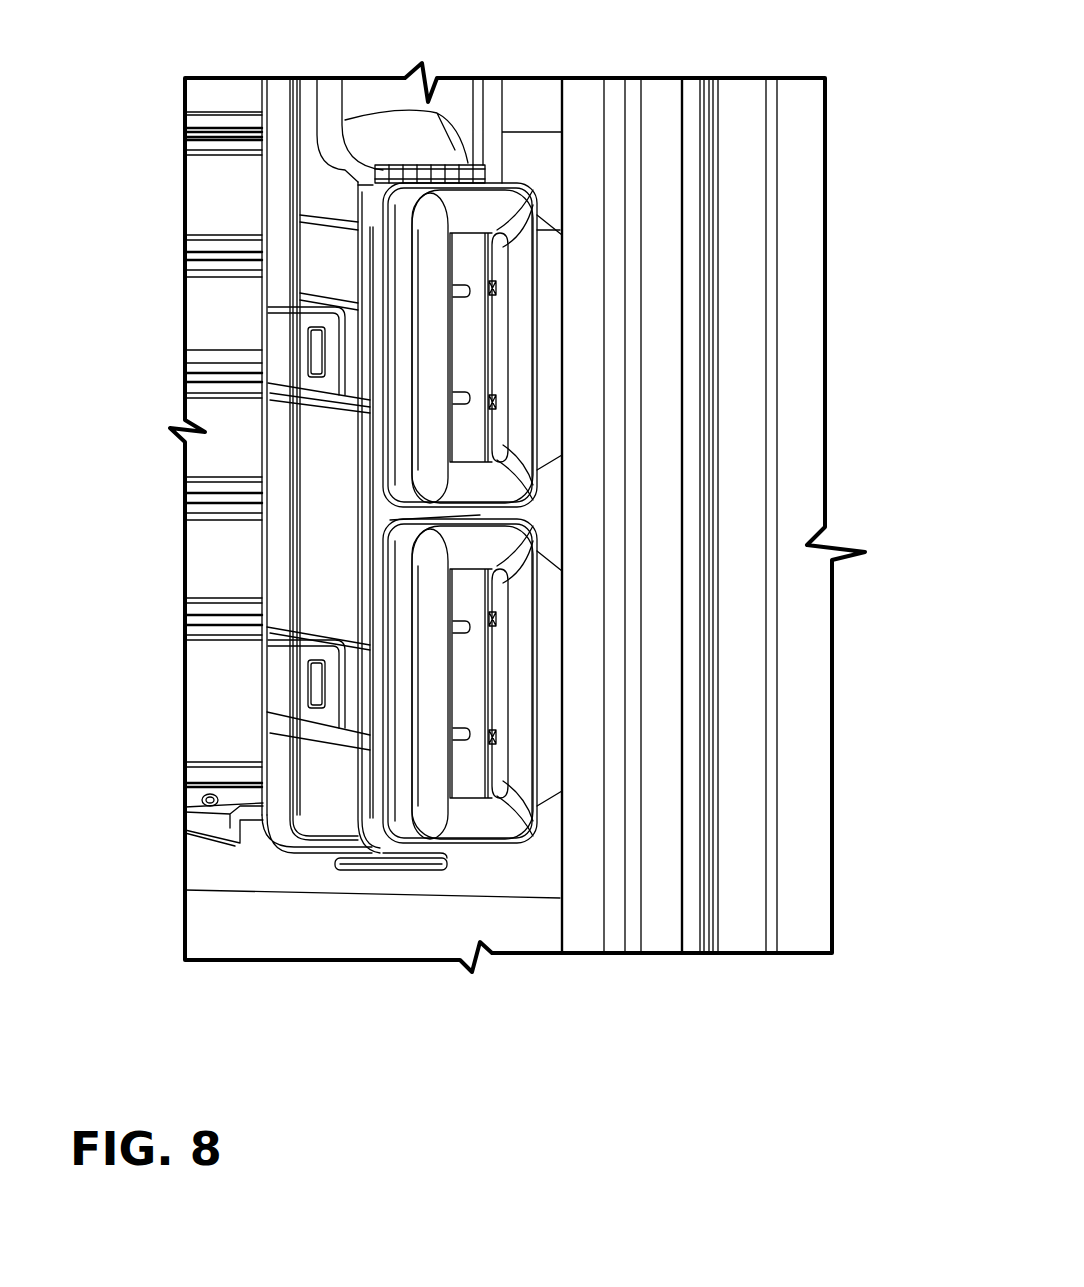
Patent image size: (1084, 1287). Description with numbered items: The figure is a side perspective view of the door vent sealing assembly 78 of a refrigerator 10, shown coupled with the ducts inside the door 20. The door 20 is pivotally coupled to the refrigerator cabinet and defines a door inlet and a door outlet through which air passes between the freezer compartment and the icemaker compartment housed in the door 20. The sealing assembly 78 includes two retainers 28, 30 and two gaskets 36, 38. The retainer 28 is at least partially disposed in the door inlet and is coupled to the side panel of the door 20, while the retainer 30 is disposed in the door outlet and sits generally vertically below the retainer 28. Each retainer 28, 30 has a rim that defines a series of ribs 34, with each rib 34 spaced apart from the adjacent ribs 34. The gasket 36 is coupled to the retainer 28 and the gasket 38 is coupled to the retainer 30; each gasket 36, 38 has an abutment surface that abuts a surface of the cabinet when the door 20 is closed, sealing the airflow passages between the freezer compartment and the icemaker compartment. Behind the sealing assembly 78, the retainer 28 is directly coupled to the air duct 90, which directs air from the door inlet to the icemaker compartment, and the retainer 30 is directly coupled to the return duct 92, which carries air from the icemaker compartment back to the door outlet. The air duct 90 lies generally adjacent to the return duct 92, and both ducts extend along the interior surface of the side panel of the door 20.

The appliance 10 is at (757, 47).
The door 20 is at (220, 190).
The retainer 28 is at (497, 305).
The retainer 30 is at (495, 644).
The ribs 34 is at (495, 290).
The gasket 36 is at (520, 425).
The gasket 38 is at (515, 697).
The door vent sealing assembly 78 is at (580, 245).
The air duct 90 is at (338, 258).
The return duct 92 is at (378, 828).